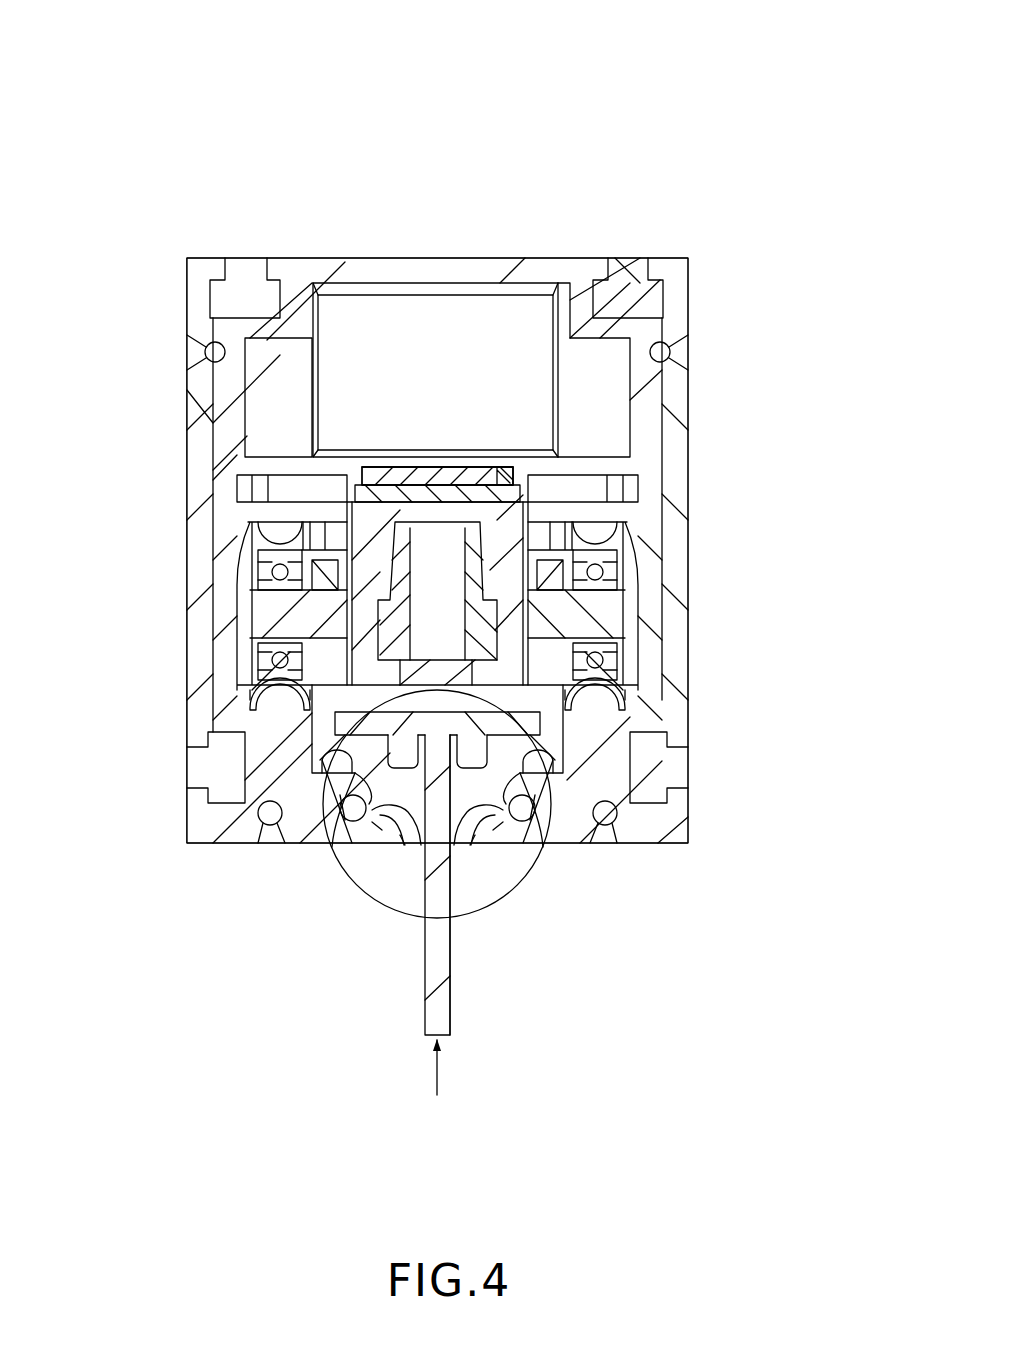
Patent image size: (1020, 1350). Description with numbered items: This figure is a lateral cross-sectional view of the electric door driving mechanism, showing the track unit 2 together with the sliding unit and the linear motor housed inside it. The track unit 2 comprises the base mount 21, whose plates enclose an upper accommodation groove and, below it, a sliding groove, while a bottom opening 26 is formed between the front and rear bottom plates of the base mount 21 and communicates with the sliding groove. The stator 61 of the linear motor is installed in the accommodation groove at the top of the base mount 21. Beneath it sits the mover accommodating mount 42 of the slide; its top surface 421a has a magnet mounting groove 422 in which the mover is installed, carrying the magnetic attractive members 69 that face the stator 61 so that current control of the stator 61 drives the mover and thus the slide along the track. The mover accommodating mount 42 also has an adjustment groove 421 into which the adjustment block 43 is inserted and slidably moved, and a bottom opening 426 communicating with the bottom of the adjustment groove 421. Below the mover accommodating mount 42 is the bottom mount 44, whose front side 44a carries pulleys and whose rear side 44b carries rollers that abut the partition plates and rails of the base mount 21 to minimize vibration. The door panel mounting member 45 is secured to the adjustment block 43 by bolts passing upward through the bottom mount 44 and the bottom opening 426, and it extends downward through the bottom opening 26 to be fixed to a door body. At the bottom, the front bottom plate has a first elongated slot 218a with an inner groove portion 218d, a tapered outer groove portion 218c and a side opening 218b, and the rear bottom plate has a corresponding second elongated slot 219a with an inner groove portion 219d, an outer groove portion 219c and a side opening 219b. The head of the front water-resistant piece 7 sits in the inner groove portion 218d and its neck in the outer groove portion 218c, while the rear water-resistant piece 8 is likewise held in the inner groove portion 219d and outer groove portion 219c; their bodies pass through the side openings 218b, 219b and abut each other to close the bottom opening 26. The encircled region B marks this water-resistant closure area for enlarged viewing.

The track unit 2 is at (658, 86).
The base mount 21 is at (184, 378).
The stator 61 is at (440, 322).
The magnetic attractive members 69 is at (468, 460).
The mover accommodating mount 42 is at (568, 193).
The adjustment groove 421 is at (530, 500).
The top surface 421a is at (504, 484).
The magnet mounting groove 422 is at (515, 494).
The adjustment block 43 is at (486, 548).
The bottom mount 44 is at (556, 628).
The front side of bottom mount 44a is at (258, 690).
The rear side of bottom mount 44b is at (618, 690).
The bottom opening 426 is at (447, 715).
The bottom opening 26 is at (474, 788).
The first elongated slot 218a is at (197, 919).
The side opening 218b is at (403, 846).
The outer groove portion 218c is at (383, 823).
The inner groove portion 218d is at (343, 818).
The second elongated slot 219a is at (678, 919).
The side opening 219b is at (472, 846).
The outer groove portion 219c is at (492, 823).
The inner groove portion 219d is at (532, 818).
The front water-resistant piece 7 is at (414, 870).
The rear water-resistant piece 8 is at (460, 870).
The door panel mounting member 45 is at (436, 1087).
The detail region B is at (330, 788).